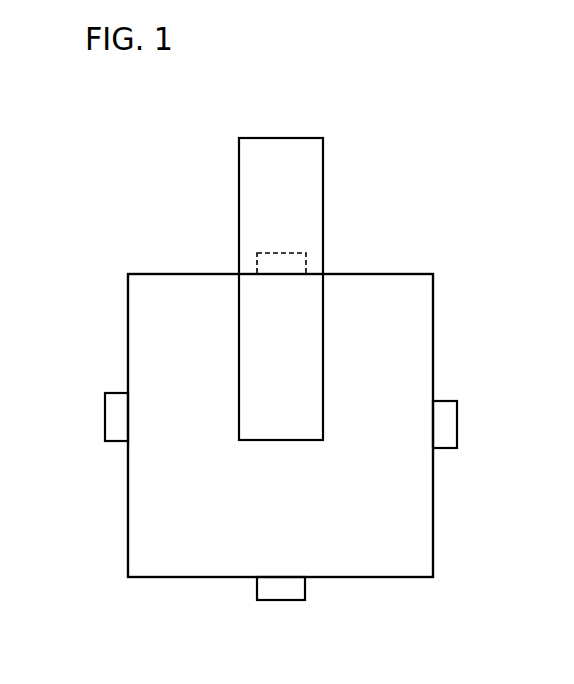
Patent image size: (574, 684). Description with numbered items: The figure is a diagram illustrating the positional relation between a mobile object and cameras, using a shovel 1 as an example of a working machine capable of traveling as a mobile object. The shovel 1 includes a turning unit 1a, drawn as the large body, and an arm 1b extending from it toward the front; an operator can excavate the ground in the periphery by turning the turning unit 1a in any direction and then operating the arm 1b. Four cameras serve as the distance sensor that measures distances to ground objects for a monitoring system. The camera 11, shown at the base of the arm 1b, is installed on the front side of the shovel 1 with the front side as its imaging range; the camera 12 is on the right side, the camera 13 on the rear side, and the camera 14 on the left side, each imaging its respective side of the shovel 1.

The shovel 1 is at (420, 274).
The turning unit 1a is at (408, 372).
The arm 1b is at (300, 138).
The camera 11 is at (283, 253).
The camera 12 is at (457, 420).
The camera 13 is at (275, 600).
The camera 14 is at (105, 418).